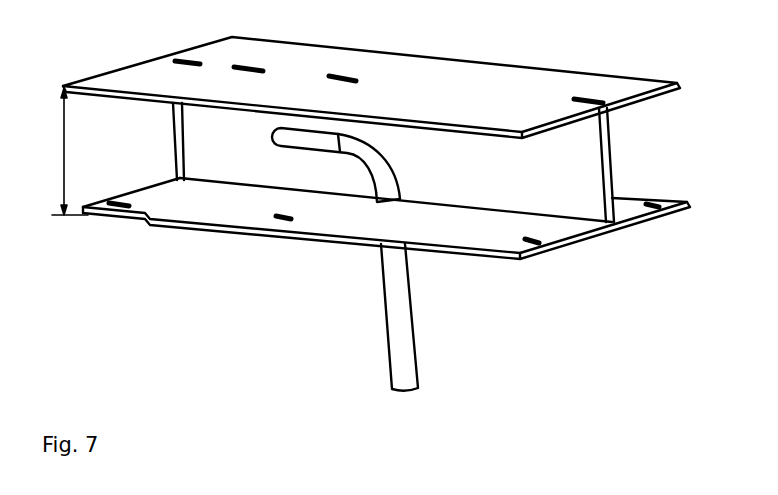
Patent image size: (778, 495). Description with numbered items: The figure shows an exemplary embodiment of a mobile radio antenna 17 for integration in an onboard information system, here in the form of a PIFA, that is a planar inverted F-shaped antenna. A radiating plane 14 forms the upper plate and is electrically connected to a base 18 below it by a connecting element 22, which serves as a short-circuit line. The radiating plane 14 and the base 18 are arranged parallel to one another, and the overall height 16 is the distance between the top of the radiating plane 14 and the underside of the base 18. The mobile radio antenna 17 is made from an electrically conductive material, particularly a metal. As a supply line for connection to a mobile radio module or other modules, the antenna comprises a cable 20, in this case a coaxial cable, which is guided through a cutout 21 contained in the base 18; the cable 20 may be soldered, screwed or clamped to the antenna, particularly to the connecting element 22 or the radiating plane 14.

The radiating plane 14 is at (440, 80).
The overall height 16 is at (60, 151).
The mobile radio antenna 17 is at (620, 223).
The base 18 is at (478, 223).
The cable 20 is at (400, 328).
The cutout 21 is at (377, 205).
The connecting element 22 is at (586, 157).